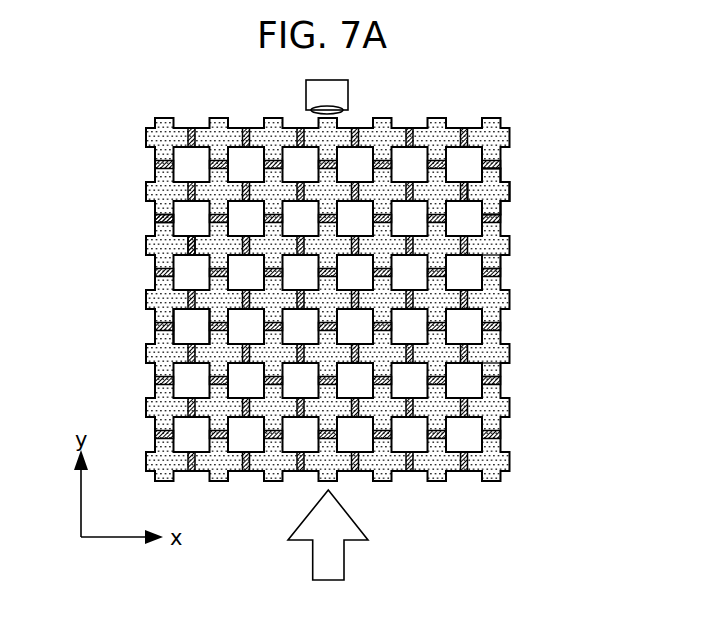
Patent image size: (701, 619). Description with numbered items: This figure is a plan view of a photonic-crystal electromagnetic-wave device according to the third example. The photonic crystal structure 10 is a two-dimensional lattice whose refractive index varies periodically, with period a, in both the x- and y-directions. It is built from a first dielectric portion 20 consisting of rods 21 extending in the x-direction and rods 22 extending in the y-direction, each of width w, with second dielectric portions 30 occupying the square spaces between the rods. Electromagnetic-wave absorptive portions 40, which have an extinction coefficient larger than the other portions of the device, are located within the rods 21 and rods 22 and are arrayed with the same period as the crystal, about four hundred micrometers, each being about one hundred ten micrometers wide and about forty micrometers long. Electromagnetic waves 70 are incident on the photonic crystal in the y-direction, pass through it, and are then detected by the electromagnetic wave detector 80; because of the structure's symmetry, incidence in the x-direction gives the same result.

The photonic crystal structure 10 is at (464, 114).
The first dielectric portion 20 is at (510, 188).
The rods extending to the x-direction 21 is at (482, 258).
The rods extending to the y-direction 22 is at (493, 368).
The second dielectric portions 30 is at (185, 327).
The electromagnetic-wave absorptive portions 40 is at (188, 239).
The electromagnetic waves 70 is at (338, 568).
The electromagnetic wave detector 80 is at (313, 92).